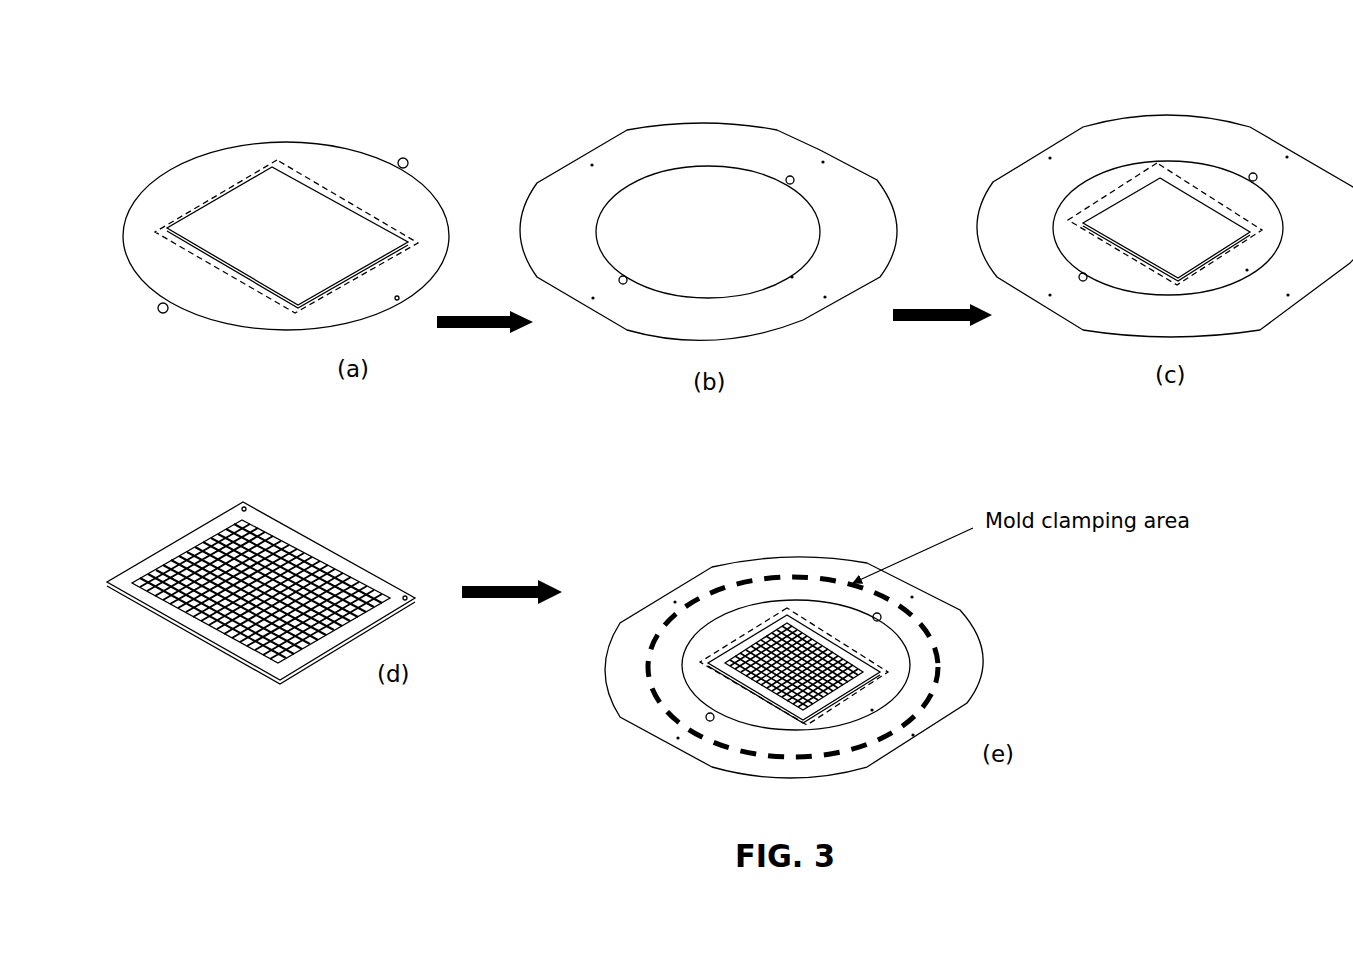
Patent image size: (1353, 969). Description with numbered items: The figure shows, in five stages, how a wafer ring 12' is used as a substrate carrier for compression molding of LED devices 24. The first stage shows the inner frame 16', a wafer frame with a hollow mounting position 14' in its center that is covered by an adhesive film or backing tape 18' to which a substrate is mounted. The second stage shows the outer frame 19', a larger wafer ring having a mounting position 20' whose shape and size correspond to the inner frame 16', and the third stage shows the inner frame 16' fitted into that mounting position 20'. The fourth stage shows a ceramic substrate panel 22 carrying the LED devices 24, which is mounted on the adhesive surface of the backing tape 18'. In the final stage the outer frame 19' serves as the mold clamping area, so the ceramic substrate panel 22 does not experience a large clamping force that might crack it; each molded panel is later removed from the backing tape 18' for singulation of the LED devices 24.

The wafer ring 12' is at (1281, 72).
The hollow mounting position 14' is at (708, 234).
The inner frame 16' is at (610, 239).
The backing tape 18' is at (708, 242).
The outer frame 19' is at (936, 430).
The mounting position 20' is at (939, 438).
The ceramic substrate panel 22 is at (578, 603).
The LED devices 24 is at (273, 562).